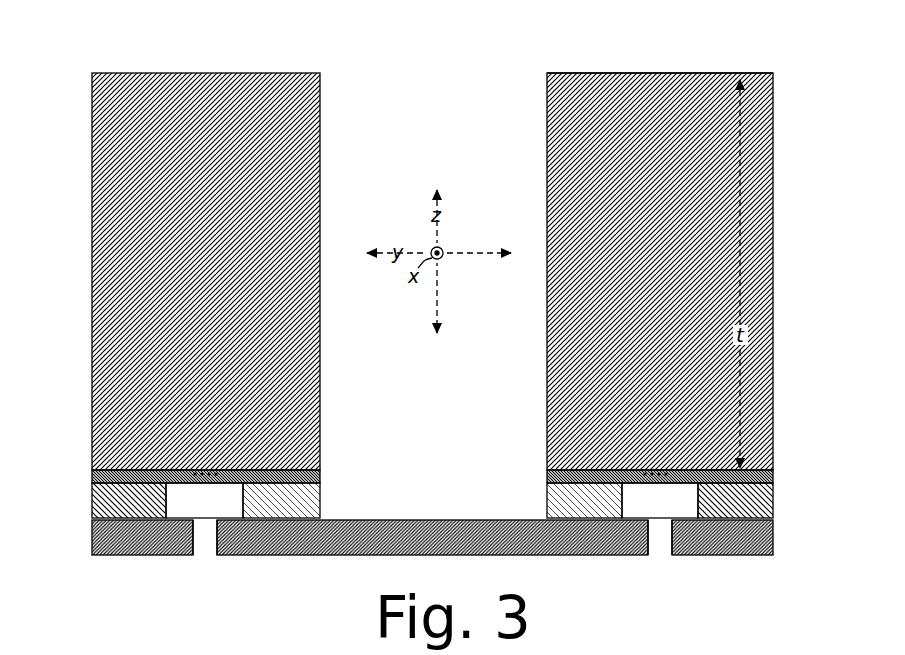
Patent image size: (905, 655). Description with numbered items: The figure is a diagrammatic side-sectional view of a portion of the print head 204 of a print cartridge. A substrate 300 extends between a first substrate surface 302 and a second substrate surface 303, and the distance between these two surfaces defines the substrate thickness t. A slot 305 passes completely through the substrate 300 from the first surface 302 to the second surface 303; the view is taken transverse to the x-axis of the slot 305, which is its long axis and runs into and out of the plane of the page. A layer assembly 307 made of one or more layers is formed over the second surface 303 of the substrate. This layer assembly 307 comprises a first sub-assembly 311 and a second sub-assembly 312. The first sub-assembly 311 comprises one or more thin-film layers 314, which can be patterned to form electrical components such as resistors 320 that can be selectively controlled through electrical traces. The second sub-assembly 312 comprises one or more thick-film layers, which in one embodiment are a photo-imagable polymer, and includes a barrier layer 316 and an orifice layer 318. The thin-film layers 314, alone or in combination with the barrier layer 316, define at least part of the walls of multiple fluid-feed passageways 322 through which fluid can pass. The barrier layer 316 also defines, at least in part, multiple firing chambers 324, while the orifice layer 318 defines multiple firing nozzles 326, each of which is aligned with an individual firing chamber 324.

The print head 204 is at (588, 40).
The substrate 300 is at (233, 211).
The first substrate surface 302 is at (656, 71).
The second substrate surface 303 is at (572, 474).
The slot 305 is at (457, 382).
The layer assembly 307 is at (88, 468).
The first sub-assembly 311 is at (773, 470).
The second sub-assembly 312 is at (775, 485).
The thin-film layers 314 is at (321, 478).
The barrier layer 316 is at (150, 512).
The orifice layer 318 is at (409, 549).
The resistors 320 is at (213, 470).
The fluid-feed passageways 322 is at (325, 502).
The firing chambers 324 is at (227, 512).
The firing nozzles 326 is at (207, 558).